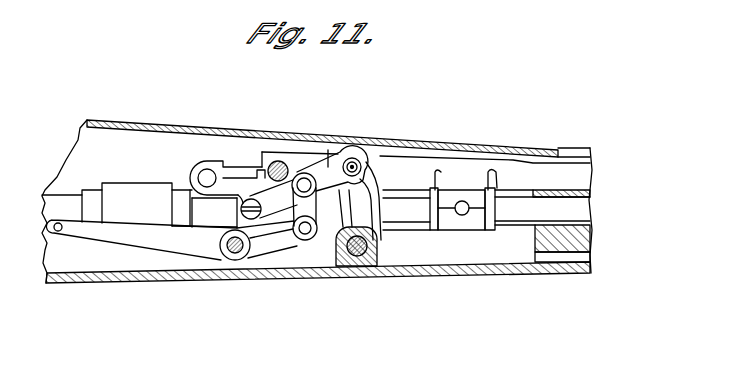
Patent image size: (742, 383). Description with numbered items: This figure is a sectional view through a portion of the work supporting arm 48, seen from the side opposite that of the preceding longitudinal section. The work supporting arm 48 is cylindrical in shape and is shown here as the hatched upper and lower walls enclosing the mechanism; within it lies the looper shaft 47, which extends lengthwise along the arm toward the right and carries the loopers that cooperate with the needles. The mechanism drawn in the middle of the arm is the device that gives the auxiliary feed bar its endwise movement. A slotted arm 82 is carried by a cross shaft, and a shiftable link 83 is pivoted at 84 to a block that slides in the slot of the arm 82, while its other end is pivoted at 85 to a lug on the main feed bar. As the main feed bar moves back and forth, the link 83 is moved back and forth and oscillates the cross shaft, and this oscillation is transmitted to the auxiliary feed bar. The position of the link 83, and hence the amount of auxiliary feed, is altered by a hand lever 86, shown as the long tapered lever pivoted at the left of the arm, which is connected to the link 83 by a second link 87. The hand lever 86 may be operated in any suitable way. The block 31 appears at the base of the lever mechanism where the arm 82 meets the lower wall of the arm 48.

The stop block 31 is at (355, 274).
The looper shaft 47 is at (582, 210).
The work supporting arm 48 is at (318, 294).
The slotted arm 82 is at (389, 171).
The shiftable link 83 is at (309, 162).
The pivot 84 is at (359, 137).
The pivot 85 is at (239, 155).
The hand lever 86 is at (148, 211).
The second link 87 is at (278, 243).